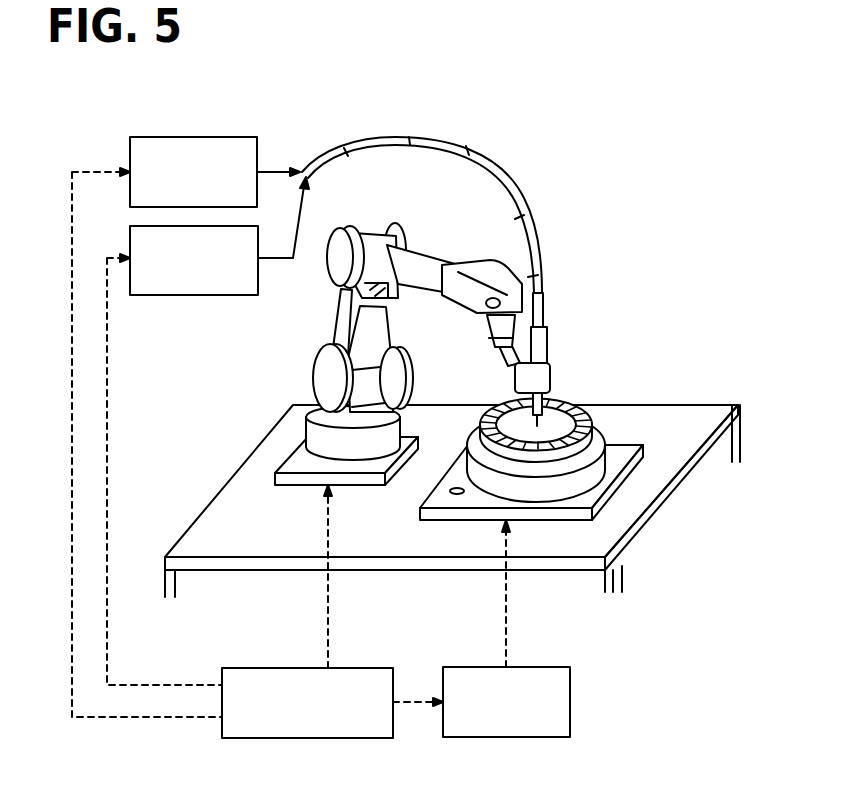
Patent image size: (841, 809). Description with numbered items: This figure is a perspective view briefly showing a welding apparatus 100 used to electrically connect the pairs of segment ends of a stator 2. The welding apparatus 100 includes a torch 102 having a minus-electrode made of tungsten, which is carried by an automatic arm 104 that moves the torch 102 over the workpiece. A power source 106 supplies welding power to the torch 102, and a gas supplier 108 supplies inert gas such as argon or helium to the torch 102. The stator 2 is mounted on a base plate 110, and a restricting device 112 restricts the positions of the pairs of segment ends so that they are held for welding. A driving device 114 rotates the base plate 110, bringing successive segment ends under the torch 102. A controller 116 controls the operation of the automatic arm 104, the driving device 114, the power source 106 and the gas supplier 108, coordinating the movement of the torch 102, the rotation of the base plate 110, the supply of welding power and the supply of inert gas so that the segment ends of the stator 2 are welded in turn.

The stator 2 is at (566, 404).
The welding apparatus 100 is at (638, 176).
The torch 102 is at (540, 410).
The automatic arm 104 is at (318, 388).
The power source 106 is at (208, 296).
The gas supplier 108 is at (222, 137).
The base plate 110 is at (596, 472).
The restricting device 112 is at (567, 445).
The driving device 114 is at (553, 667).
The controller 116 is at (366, 667).